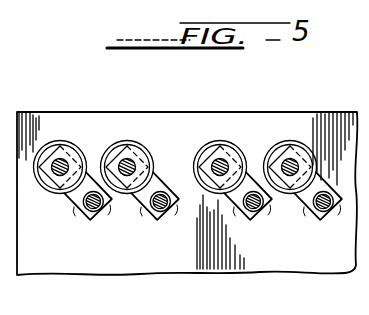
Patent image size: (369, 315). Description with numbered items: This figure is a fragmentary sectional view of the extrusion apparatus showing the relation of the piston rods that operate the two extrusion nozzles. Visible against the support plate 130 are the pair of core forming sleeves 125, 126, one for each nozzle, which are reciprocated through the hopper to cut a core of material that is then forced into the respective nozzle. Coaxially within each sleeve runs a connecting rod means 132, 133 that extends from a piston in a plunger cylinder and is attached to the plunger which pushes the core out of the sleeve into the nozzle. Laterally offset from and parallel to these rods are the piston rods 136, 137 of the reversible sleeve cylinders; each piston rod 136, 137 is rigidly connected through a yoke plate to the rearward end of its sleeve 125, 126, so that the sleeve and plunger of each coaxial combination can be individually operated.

The core forming sleeve 125 is at (67, 145).
The core forming sleeve 126 is at (129, 143).
The support plate 130 is at (272, 118).
The connecting rod means 132 is at (52, 192).
The connecting rod means 133 is at (146, 154).
The piston rod 136 is at (80, 221).
The piston rod 137 is at (160, 220).